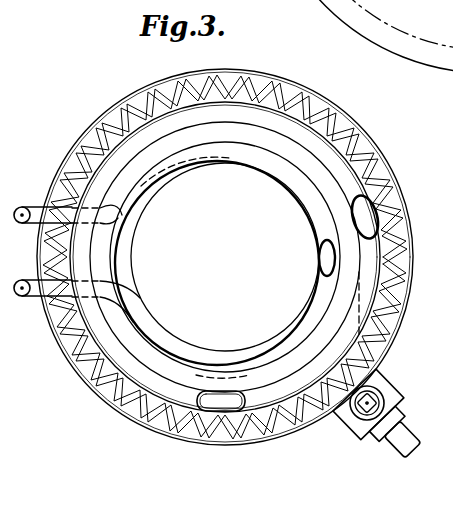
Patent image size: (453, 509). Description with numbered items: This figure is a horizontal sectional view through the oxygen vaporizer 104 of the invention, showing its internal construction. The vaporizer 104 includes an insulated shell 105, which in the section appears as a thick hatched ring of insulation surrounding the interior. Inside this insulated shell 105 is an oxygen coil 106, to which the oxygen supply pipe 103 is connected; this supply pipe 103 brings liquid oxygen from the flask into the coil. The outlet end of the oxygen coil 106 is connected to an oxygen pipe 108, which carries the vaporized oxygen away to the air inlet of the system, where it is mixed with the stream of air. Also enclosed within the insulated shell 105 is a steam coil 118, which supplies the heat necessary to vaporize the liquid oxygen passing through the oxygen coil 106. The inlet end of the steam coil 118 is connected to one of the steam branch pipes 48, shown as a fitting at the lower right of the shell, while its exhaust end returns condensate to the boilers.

The steam branch pipe 48 is at (392, 452).
The supply pipe 103 is at (22, 207).
The oxygen vaporizer 104 is at (394, 123).
The insulated shell 105 is at (115, 108).
The oxygen coil 106 is at (140, 231).
The oxygen pipe 108 is at (22, 297).
The steam coil 118 is at (364, 278).